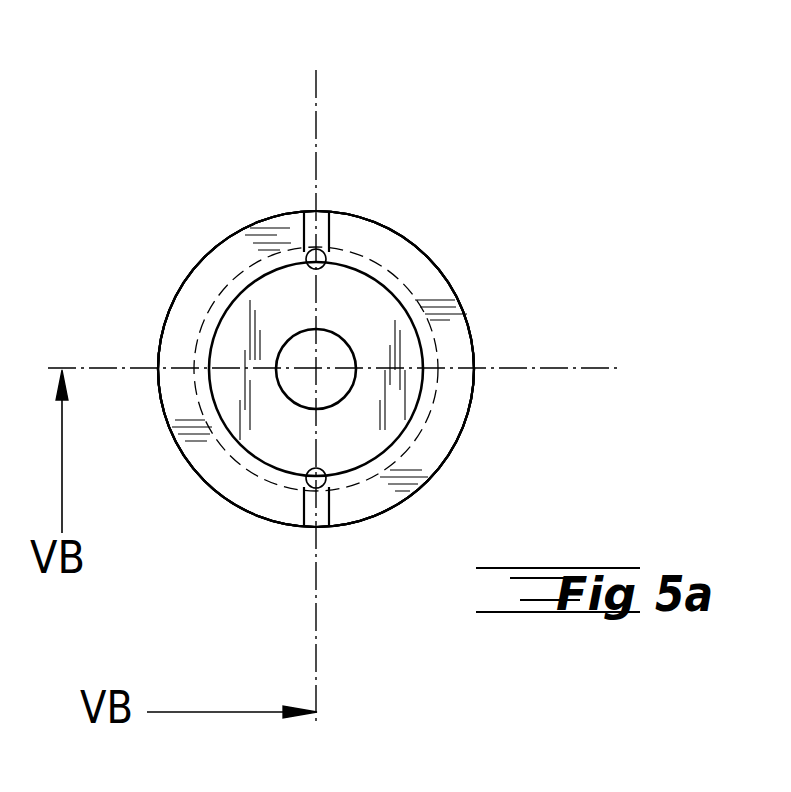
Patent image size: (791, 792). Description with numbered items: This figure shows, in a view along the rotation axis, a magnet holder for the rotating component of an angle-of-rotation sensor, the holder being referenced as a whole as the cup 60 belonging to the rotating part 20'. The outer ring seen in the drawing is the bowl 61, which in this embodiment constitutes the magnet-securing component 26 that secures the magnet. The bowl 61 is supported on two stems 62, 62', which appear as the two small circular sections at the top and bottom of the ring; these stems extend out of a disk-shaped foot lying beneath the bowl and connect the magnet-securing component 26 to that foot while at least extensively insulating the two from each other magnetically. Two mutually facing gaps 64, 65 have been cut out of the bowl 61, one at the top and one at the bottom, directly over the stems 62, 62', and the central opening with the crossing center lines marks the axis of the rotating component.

The cup 60 is at (214, 180).
The tool holder 20' is at (307, 265).
The bowl 61 is at (402, 255).
The magnet-securing component 26 is at (349, 321).
The stem 62 is at (217, 247).
The stem 62' is at (253, 523).
The gap 64 is at (322, 205).
The gap 65 is at (320, 508).